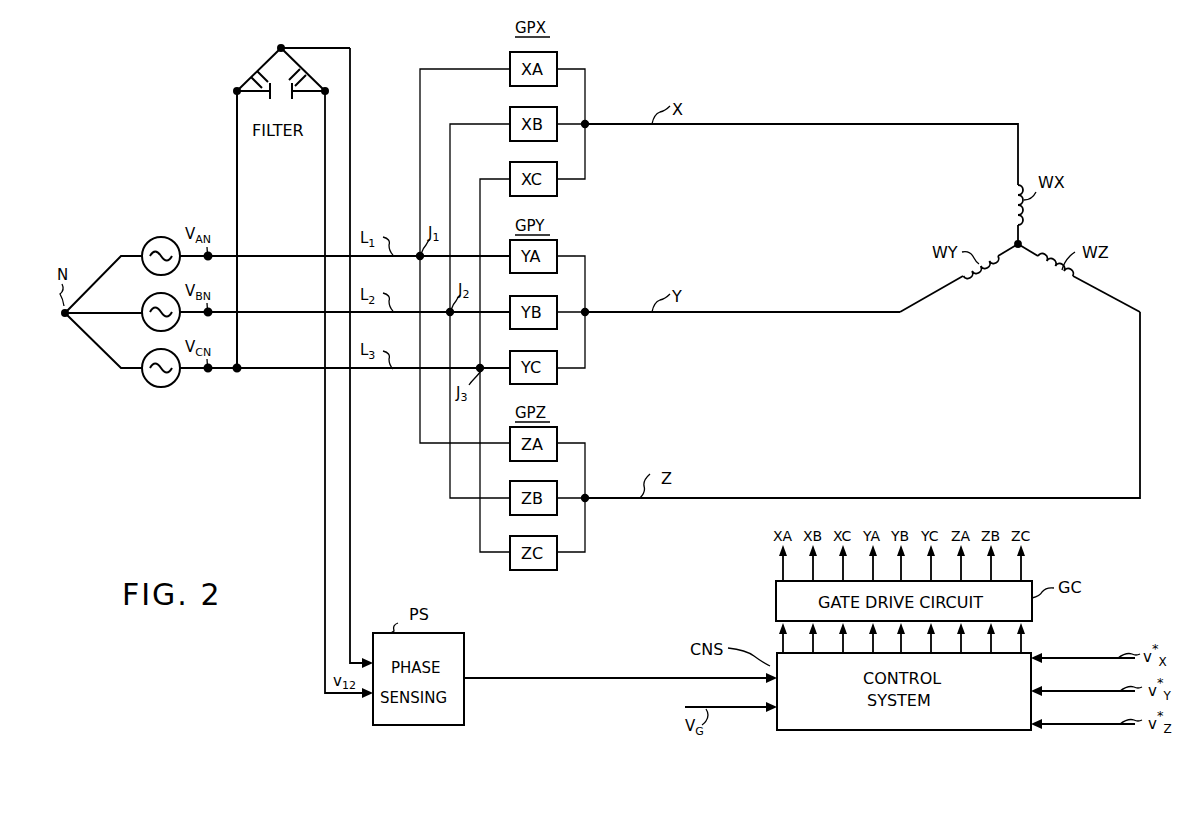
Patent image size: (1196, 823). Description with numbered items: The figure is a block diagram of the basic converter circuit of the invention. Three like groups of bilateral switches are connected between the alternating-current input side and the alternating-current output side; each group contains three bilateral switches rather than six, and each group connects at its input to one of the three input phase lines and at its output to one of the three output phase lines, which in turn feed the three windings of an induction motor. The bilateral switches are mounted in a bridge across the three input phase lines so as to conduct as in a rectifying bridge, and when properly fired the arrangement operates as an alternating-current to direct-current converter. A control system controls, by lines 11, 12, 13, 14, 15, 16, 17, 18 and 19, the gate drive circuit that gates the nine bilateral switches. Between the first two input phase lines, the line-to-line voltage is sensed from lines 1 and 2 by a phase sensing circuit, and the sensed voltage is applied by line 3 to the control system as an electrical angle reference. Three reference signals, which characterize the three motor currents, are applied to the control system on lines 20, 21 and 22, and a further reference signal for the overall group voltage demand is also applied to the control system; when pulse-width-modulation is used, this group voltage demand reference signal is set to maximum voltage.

The line 1 is at (352, 480).
The line 2 is at (324, 480).
The line 3 is at (548, 678).
The lines 11 is at (780, 643).
The lines 12 is at (812, 643).
The lines 13 is at (842, 645).
The lines 14 is at (872, 644).
The lines 15 is at (900, 644).
The lines 16 is at (930, 644).
The lines 17 is at (960, 644).
The lines 18 is at (990, 644).
The lines 19 is at (1023, 641).
The line 20 is at (1063, 655).
The line 21 is at (1058, 690).
The line 22 is at (1058, 723).